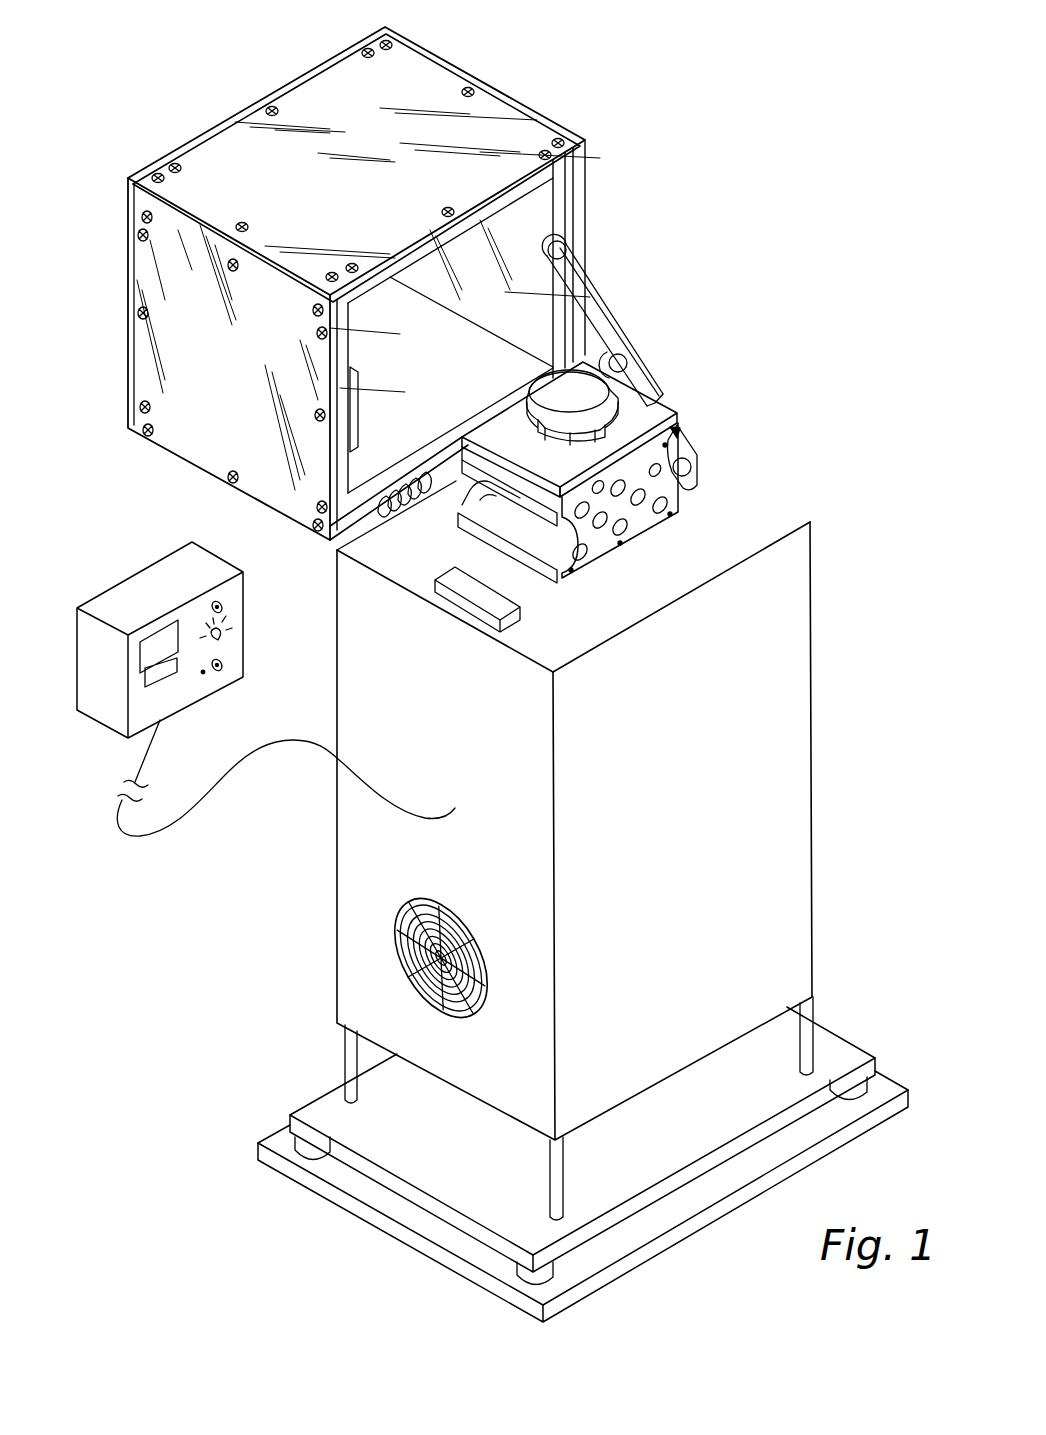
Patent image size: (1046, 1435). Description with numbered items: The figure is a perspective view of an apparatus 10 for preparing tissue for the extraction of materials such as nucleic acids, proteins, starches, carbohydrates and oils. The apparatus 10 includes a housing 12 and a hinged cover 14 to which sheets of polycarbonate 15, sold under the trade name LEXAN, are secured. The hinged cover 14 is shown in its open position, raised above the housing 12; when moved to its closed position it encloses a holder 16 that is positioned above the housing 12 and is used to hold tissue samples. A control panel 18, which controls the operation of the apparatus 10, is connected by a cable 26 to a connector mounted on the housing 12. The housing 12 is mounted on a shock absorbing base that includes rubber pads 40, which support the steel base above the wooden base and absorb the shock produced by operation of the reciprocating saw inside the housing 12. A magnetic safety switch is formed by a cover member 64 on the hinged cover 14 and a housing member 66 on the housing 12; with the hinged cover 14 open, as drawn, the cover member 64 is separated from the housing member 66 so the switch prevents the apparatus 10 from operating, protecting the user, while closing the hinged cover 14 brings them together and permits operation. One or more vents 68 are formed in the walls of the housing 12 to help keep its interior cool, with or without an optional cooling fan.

The apparatus 10 is at (732, 346).
The housing 12 is at (812, 614).
The hinged cover 14 is at (200, 120).
The sheets of polycarbonate 15 is at (442, 97).
The holder 16 is at (698, 413).
The control panel 18 is at (150, 585).
The cable 26 is at (273, 747).
The rubber pads 40 is at (551, 1283).
The cover member 64 is at (358, 400).
The housing member 66 is at (483, 606).
The vents 68 is at (422, 900).